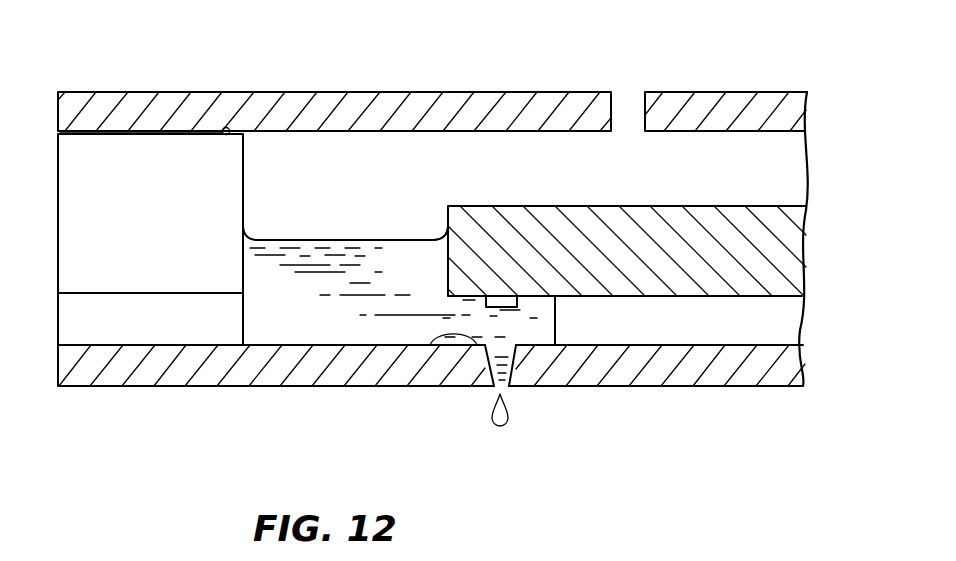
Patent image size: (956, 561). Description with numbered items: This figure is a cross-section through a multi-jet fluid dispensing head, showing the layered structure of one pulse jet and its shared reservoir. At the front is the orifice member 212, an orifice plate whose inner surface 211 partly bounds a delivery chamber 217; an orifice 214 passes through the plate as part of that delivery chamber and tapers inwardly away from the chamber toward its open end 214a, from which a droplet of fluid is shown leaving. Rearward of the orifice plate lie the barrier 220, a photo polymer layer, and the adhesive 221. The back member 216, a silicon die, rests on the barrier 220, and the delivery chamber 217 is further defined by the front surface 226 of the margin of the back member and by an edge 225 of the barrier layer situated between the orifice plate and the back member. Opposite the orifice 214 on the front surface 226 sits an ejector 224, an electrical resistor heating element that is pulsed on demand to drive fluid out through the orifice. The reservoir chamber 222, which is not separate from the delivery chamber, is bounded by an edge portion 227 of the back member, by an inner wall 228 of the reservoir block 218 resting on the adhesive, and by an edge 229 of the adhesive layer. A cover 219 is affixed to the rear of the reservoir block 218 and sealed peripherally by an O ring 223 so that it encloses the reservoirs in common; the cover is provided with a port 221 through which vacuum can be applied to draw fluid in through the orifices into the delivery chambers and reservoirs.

The inner surface 211 is at (428, 346).
The orifice member 212 is at (211, 372).
The orifice 214 is at (481, 388).
The open end 214a is at (506, 390).
The back member 216 is at (517, 215).
The delivery chamber 217 is at (543, 312).
The reservoir block 218 is at (113, 160).
The cover 219 is at (484, 104).
The barrier 220 is at (710, 330).
The adhesive 221 is at (630, 105).
The reservoir chamber 222 is at (312, 326).
The O ring 223 is at (224, 127).
The ejector 224 is at (503, 300).
The edge 225 is at (556, 326).
The front surface 226 is at (446, 298).
The edge portion 227 is at (447, 206).
The inner wall 228 is at (244, 173).
The edge 229 is at (245, 308).